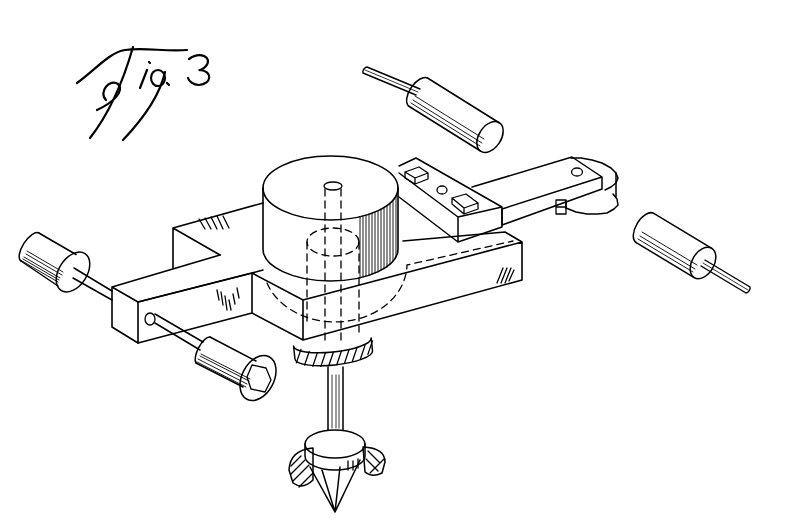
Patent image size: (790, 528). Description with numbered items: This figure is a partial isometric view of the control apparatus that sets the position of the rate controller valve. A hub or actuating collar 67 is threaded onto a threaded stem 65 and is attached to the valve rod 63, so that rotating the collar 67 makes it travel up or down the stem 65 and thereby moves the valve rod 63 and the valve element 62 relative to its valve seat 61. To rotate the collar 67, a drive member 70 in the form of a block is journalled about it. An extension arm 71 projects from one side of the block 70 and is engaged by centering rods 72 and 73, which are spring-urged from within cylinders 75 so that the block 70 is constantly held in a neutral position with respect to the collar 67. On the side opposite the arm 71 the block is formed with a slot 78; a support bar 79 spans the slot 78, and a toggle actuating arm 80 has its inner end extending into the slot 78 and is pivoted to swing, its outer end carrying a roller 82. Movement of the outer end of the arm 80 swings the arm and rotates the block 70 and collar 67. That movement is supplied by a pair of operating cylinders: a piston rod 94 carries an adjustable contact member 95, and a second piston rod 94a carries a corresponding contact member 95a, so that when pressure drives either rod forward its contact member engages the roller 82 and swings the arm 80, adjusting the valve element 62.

The valve seat 61 is at (382, 458).
The valve element 62 is at (349, 485).
The valve rod 63 is at (321, 184).
The threaded stem 65 is at (352, 338).
The hub or actuating collar 67 is at (308, 165).
The drive member 70 is at (515, 268).
The extension arm 71 is at (137, 279).
The centering rod 72 is at (90, 293).
The centering rod 73 is at (185, 347).
The cylinder 75 is at (44, 233).
The slot 78 is at (402, 246).
The support bar 79 is at (403, 166).
The toggle actuating arm 80 is at (528, 177).
The roller 82 is at (598, 166).
The piston rod 94 is at (373, 86).
The adjustable contact member 95 is at (467, 104).
The piston rod 94a is at (731, 287).
The adjustable contact member 95a is at (657, 217).